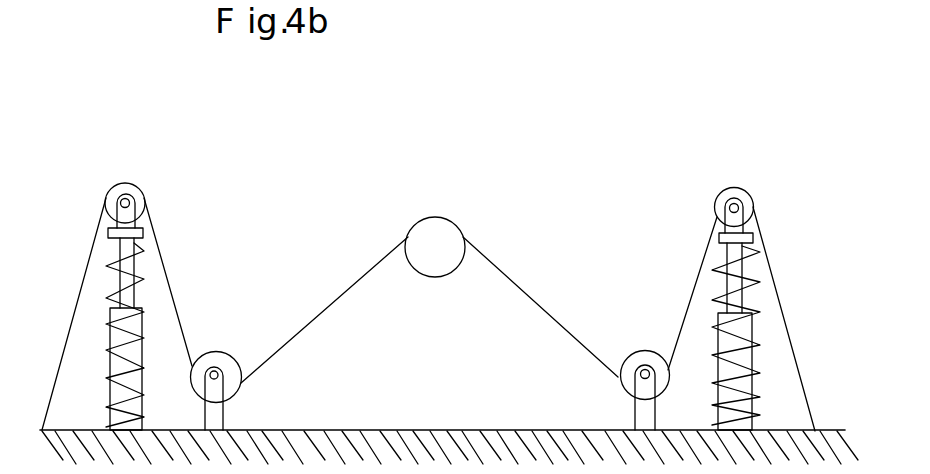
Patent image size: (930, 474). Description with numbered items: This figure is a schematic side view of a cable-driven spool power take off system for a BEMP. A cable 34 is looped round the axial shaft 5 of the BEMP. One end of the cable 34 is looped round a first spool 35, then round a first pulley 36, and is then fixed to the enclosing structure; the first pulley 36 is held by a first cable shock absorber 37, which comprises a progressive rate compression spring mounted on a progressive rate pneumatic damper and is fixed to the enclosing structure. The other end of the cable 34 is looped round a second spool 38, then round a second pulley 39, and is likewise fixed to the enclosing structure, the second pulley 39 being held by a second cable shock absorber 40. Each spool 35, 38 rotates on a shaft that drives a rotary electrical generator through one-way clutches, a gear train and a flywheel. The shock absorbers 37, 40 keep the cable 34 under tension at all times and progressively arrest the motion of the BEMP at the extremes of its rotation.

The axial shaft 5 is at (449, 221).
The cable 34 is at (505, 272).
The first spool 35 is at (219, 352).
The first pulley 36 is at (131, 184).
The first cable shock absorber 37 is at (98, 358).
The second spool 38 is at (636, 352).
The second pulley 39 is at (723, 192).
The second cable shock absorber 40 is at (762, 354).